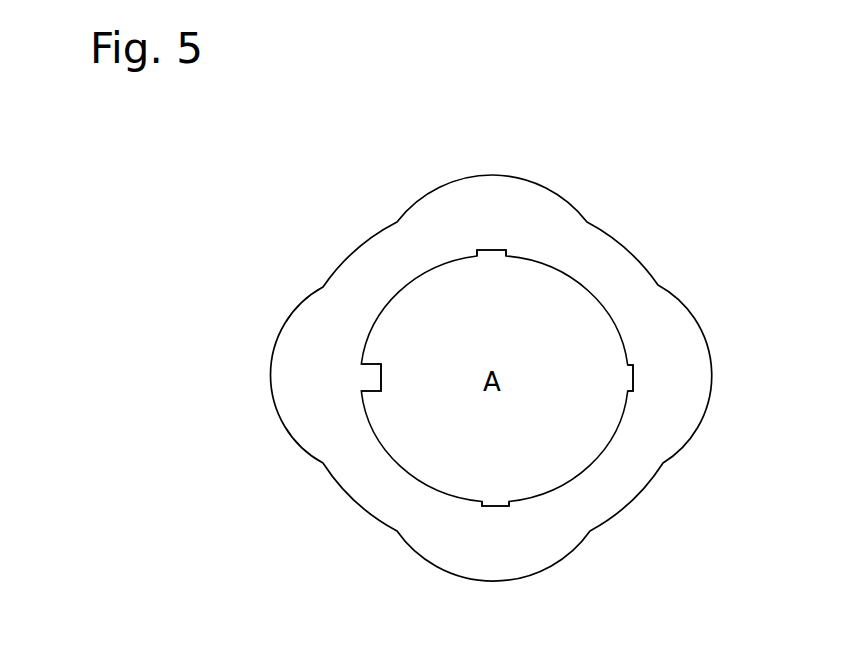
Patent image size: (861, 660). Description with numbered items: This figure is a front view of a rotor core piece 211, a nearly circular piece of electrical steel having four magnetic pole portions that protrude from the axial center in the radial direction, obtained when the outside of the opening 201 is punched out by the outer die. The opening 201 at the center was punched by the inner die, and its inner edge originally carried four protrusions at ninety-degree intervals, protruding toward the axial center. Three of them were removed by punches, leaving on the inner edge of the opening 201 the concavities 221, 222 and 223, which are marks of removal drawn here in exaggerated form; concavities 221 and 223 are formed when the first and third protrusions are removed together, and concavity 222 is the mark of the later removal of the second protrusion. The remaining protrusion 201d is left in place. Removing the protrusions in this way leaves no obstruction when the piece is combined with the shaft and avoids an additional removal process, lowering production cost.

The opening 201 is at (562, 305).
The protrusion 201d is at (375, 379).
The rotor core piece 211 is at (640, 288).
The concavity 221 is at (490, 252).
The concavity 222 is at (628, 378).
The concavity 223 is at (497, 503).